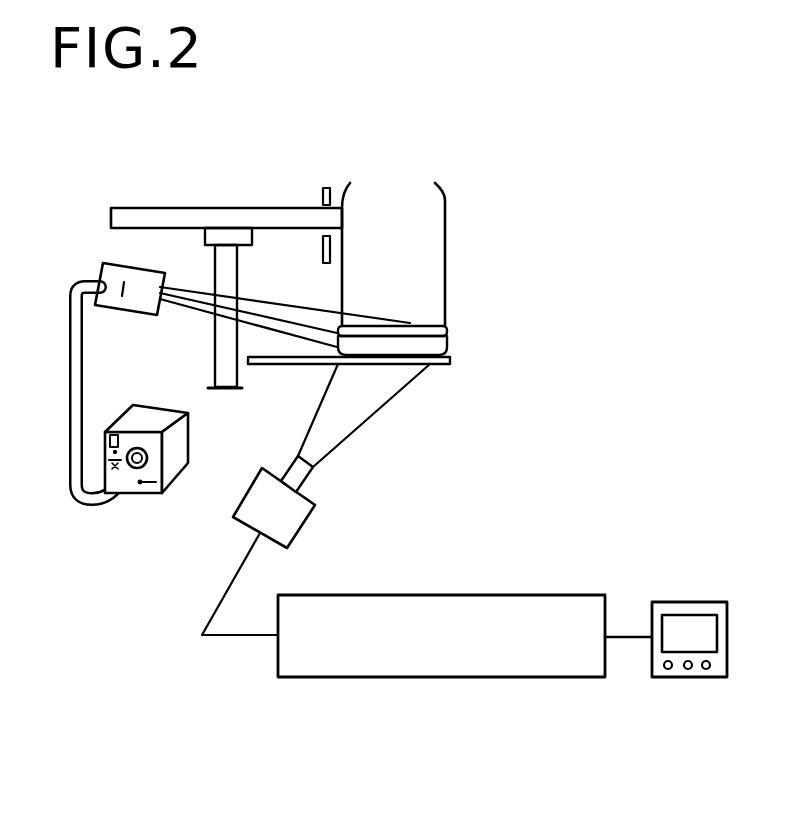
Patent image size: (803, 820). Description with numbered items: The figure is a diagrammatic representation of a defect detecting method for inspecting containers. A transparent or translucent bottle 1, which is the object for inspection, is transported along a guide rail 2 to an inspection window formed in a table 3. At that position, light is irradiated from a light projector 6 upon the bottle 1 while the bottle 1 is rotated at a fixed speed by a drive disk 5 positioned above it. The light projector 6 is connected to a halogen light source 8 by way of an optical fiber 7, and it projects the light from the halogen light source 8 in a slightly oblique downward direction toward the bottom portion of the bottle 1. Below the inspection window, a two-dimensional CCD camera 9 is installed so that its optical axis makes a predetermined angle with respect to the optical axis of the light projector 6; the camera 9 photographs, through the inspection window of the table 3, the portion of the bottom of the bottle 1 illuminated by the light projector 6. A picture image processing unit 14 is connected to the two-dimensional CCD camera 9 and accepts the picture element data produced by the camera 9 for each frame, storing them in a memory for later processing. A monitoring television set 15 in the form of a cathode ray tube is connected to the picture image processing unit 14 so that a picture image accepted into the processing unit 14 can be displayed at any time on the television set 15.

The bottle 1 is at (447, 213).
The guide rail 2 is at (322, 200).
The table 3 is at (438, 365).
The drive disk 5 is at (148, 208).
The light projector 6 is at (140, 283).
The optical fiber 7 is at (78, 425).
The halogen light source 8 is at (172, 457).
The two-dimensional CCD camera 9 is at (308, 520).
The picture image processing unit 14 is at (523, 595).
The monitoring television set 15 is at (690, 602).